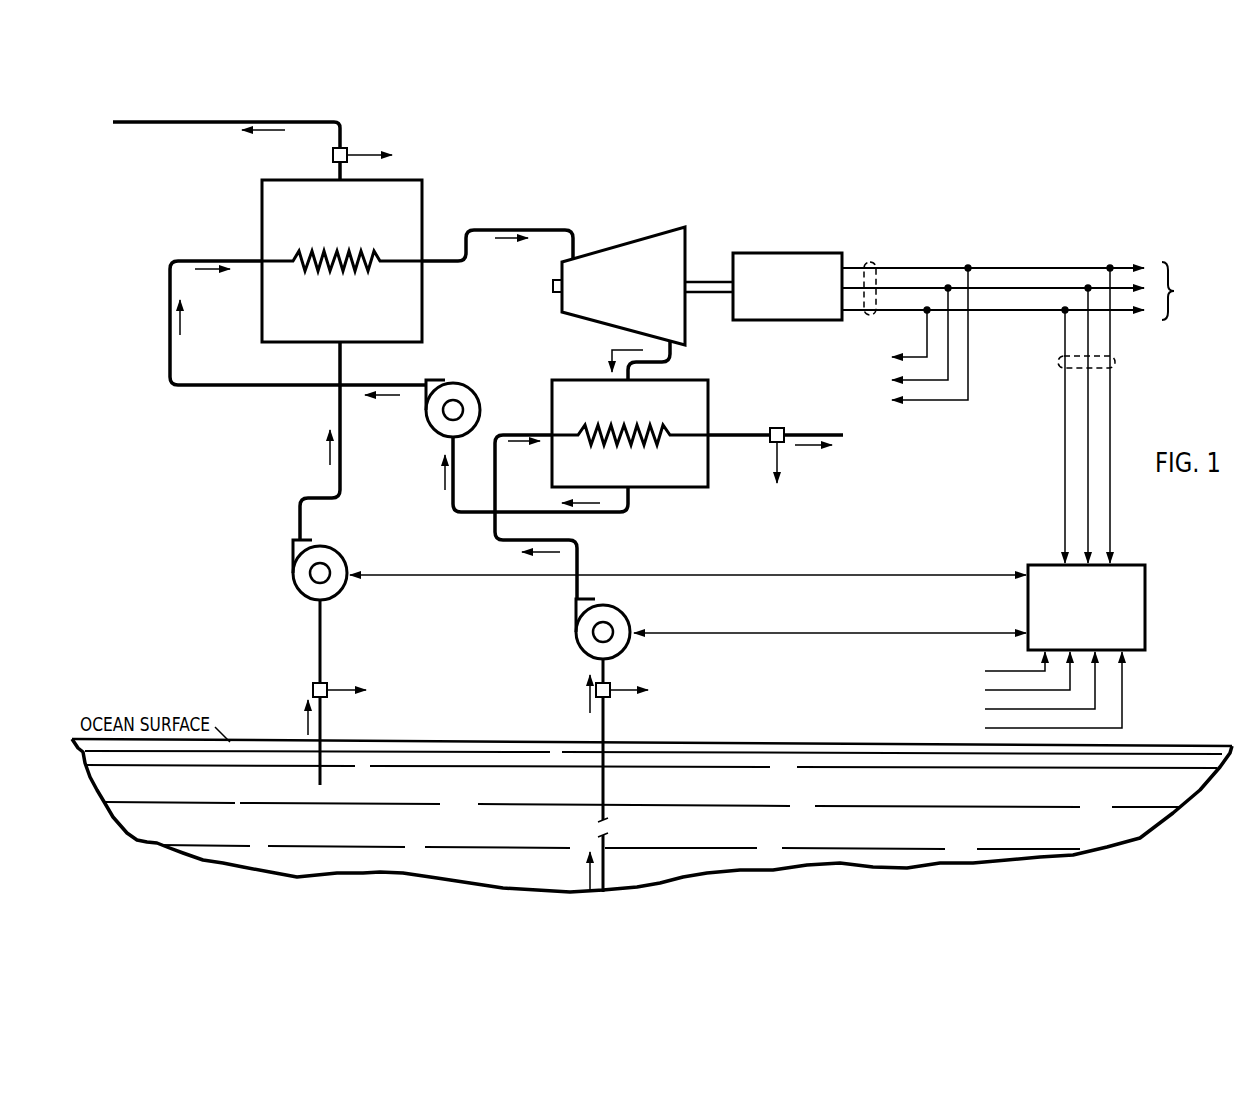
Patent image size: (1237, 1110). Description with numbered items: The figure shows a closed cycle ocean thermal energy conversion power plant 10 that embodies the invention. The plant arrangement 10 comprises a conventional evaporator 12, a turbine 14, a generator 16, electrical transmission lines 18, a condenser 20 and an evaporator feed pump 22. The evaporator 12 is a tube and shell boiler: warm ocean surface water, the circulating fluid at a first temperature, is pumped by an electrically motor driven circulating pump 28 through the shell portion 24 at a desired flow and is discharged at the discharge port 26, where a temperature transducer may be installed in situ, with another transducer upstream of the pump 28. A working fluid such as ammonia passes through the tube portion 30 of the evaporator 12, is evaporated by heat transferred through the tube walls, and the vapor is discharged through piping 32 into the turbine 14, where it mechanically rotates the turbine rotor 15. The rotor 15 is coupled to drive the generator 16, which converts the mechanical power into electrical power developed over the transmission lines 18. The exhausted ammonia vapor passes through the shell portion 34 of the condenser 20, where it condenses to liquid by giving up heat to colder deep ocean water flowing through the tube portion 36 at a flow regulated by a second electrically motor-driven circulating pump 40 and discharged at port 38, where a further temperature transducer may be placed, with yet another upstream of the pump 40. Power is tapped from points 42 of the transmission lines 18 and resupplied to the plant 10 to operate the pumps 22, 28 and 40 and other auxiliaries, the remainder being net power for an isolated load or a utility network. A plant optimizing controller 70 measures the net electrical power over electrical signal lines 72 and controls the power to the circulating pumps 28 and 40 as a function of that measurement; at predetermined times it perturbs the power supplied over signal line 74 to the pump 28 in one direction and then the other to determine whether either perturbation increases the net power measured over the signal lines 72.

The ocean thermal energy conversion power plant 10 is at (562, 356).
The evaporator 12 is at (412, 181).
The turbine 14 is at (642, 230).
The turbine rotor 15 is at (707, 278).
The generator 16 is at (758, 240).
The electrical transmission lines 18 is at (870, 262).
The condenser 20 is at (702, 380).
The evaporator feed pump 22 is at (458, 383).
The shell portion of the evaporator 24 is at (288, 244).
The discharge port 26 is at (338, 172).
The circulating pump 28 is at (292, 573).
The tube portion of the evaporator 30 is at (325, 274).
The piping 32 is at (510, 228).
The shell portion of the condenser 34 is at (572, 421).
The tube portion of the condenser 36 is at (620, 446).
The discharge port 38 is at (768, 431).
The circulating pump 40 is at (620, 614).
The tap points 42 is at (962, 264).
The plant optimizing controller 70 is at (1126, 565).
The electrical signal lines 72 is at (1118, 362).
The signal line 74 is at (420, 575).